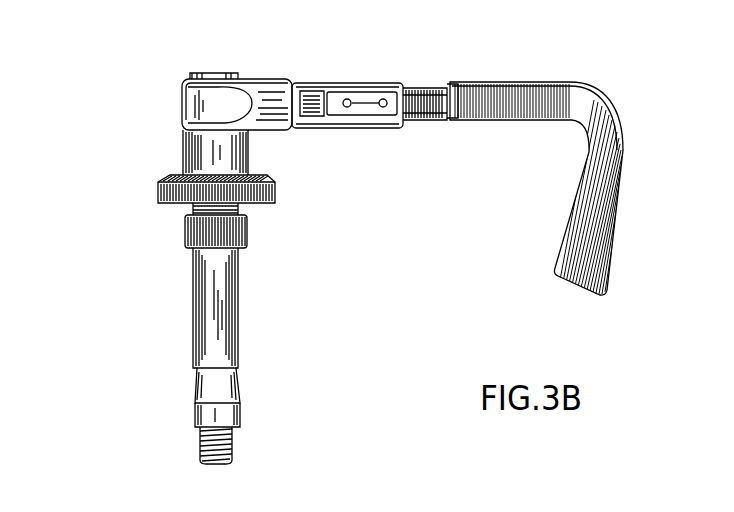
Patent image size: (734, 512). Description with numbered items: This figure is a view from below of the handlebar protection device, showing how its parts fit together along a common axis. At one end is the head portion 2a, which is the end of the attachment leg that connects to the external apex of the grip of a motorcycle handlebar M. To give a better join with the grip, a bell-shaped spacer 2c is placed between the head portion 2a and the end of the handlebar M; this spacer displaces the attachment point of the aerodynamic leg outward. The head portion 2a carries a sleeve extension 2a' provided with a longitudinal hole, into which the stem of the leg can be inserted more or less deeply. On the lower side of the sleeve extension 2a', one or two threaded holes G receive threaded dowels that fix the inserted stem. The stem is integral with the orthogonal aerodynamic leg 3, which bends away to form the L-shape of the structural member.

The head portion 2a is at (239, 71).
The sleeve extension 2a' is at (353, 70).
The spacer 2c is at (160, 180).
The threaded hole G is at (378, 128).
The motorcycle handlebar M is at (185, 308).
The aerodynamic leg 3 is at (627, 210).